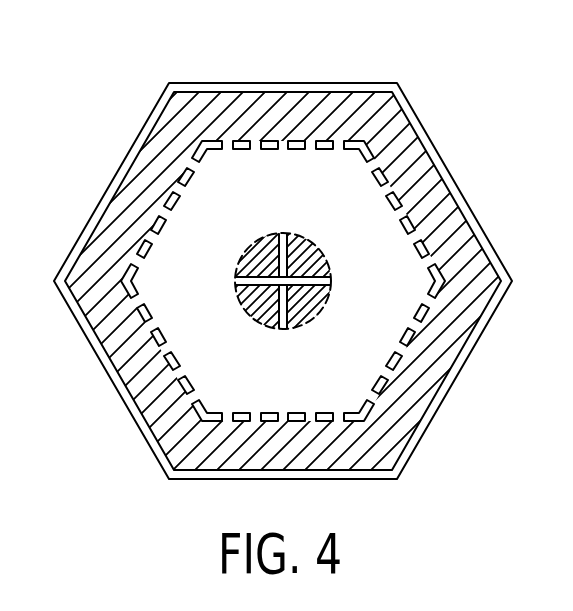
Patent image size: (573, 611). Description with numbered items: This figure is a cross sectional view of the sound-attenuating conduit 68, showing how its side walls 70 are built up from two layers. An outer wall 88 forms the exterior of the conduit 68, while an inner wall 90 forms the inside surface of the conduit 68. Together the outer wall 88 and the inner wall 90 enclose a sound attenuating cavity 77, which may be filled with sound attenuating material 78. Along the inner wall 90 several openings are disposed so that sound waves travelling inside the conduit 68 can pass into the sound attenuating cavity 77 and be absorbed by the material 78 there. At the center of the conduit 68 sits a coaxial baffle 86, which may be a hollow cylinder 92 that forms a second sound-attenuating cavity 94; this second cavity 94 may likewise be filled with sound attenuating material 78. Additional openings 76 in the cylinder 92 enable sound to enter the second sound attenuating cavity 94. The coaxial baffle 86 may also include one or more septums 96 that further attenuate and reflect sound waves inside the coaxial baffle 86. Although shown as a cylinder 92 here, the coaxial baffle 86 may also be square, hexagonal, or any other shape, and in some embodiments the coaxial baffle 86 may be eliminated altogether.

The sound-attenuating conduit 68 is at (131, 63).
The side walls 70 is at (372, 480).
The sound attenuating cavity 77 is at (477, 260).
The outer wall 88 is at (440, 392).
The sound attenuating material 78 is at (416, 190).
The openings 76 is at (235, 150).
The inner wall 90 is at (357, 413).
The coaxial baffle 86 is at (248, 248).
The hollow cylinder 92 is at (324, 254).
The second sound-attenuating cavity 94 is at (280, 238).
The septums 96 is at (316, 298).